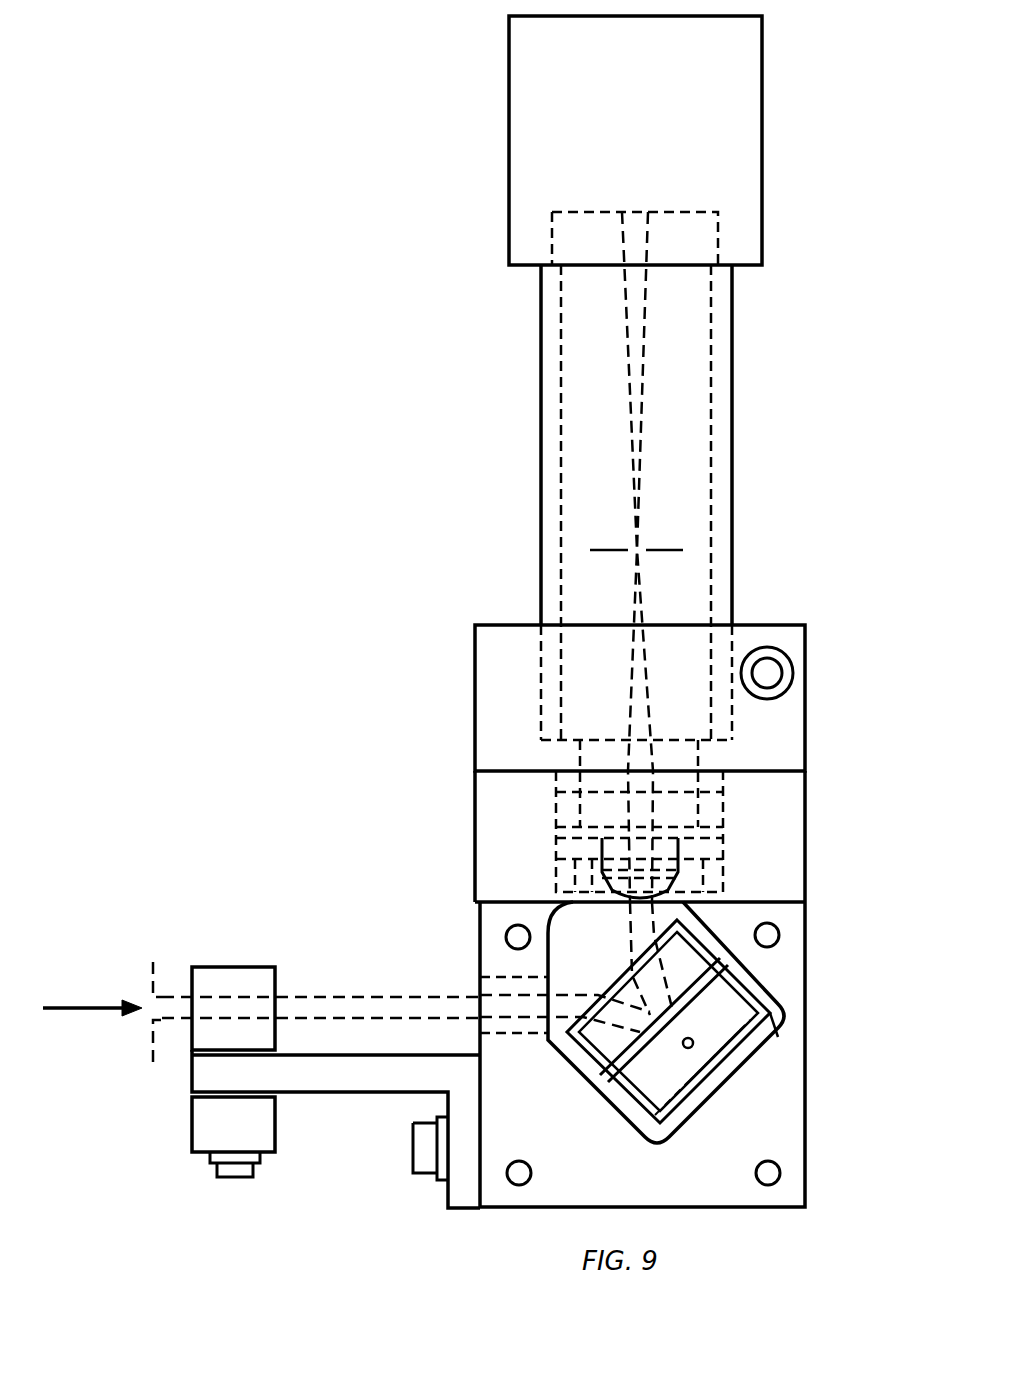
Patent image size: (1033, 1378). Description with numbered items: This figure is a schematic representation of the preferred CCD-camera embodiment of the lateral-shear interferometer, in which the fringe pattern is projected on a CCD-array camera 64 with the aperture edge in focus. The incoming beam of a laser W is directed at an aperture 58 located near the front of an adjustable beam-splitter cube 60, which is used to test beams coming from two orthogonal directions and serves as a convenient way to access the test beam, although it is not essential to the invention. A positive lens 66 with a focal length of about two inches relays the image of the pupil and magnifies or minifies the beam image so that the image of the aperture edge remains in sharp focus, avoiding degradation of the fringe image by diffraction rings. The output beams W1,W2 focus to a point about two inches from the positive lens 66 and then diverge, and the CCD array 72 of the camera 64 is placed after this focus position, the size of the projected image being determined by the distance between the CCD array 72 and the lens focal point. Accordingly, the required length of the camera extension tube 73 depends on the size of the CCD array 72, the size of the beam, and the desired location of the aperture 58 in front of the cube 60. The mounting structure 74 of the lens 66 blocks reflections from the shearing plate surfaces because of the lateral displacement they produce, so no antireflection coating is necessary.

The camera 64 is at (763, 137).
The CCD array 72 is at (633, 212).
The camera extension tube 73 is at (733, 440).
The output beams W1,W2 is at (578, 660).
The mounting structure 74 is at (805, 812).
The positive lens 66 is at (705, 880).
The laser beam W is at (380, 1003).
The aperture 58 is at (153, 962).
The adjustable beam-splitter cube 60 is at (232, 967).